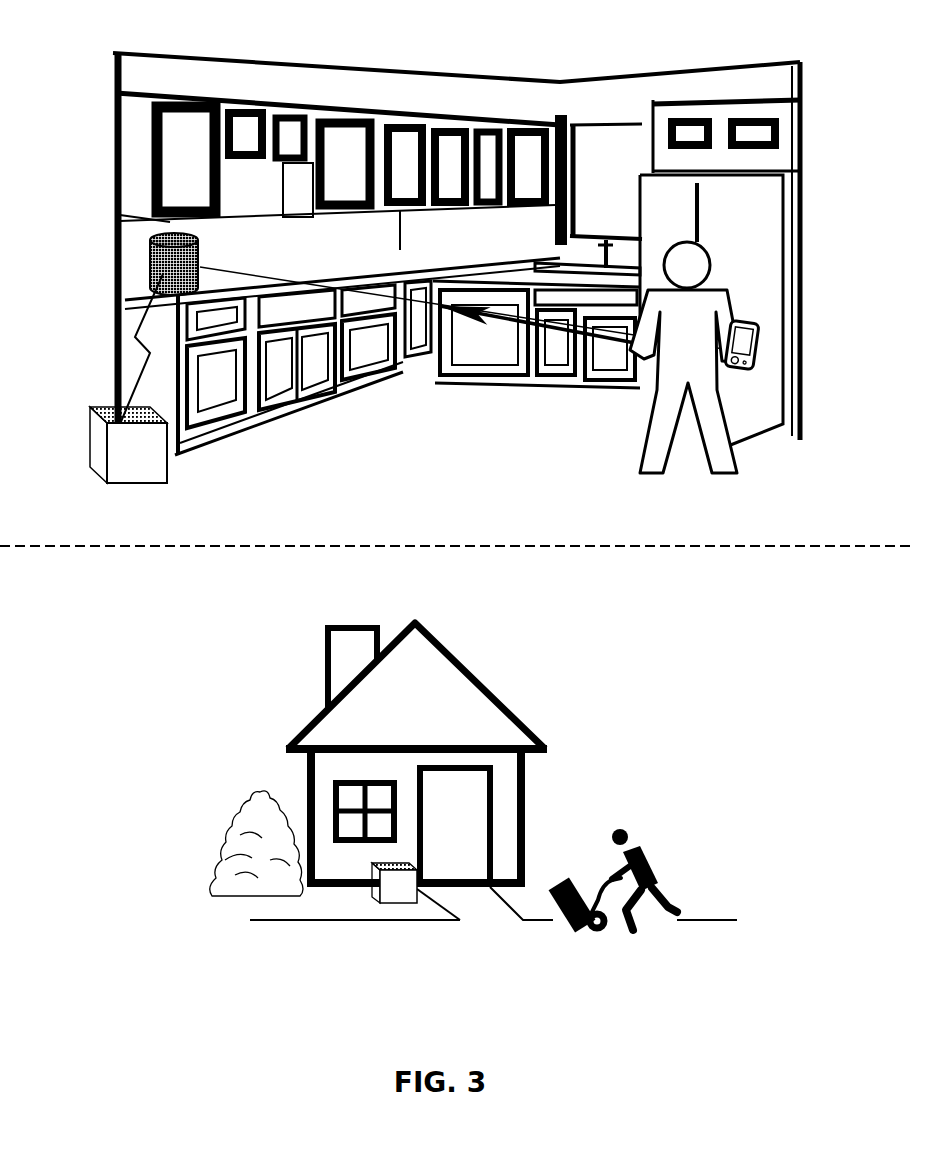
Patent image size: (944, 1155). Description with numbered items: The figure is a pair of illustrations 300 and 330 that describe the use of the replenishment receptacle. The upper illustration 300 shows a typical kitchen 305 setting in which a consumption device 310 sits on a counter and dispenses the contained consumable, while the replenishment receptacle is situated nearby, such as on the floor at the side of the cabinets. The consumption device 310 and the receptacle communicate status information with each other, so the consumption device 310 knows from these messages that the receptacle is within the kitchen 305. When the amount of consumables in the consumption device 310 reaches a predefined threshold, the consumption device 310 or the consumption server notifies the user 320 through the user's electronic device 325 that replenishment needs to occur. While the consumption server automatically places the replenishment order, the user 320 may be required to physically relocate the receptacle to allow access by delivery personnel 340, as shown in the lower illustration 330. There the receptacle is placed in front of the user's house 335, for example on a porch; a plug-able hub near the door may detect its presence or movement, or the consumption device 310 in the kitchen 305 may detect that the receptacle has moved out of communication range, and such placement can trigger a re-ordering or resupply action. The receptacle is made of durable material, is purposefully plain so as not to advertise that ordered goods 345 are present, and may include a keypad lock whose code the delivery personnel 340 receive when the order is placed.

The illustration 300 is at (422, 248).
The kitchen 305 is at (456, 260).
The consumption device 310 is at (174, 264).
The user 320 is at (684, 357).
The electronic device 325 is at (745, 359).
The illustration 330 is at (390, 788).
The house 335 is at (416, 753).
The delivery personnel 340 is at (639, 868).
The ordered goods 345 is at (560, 920).